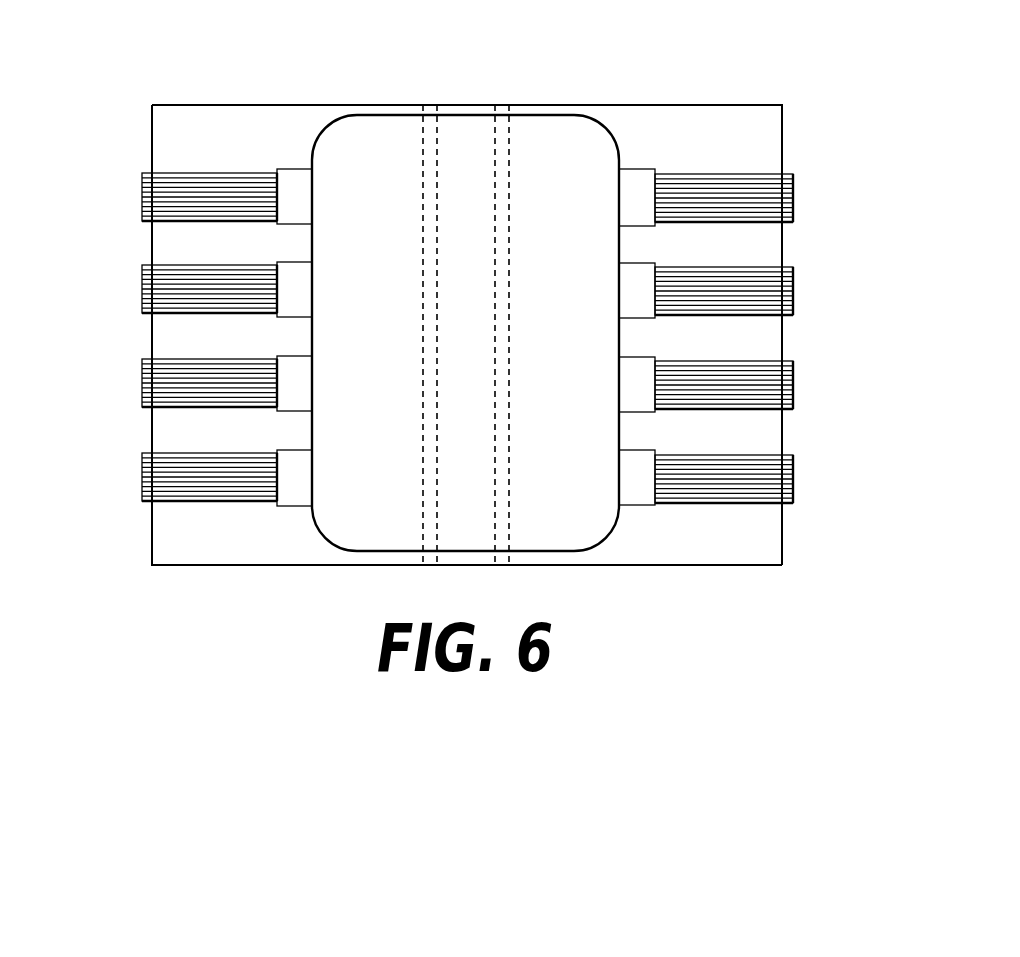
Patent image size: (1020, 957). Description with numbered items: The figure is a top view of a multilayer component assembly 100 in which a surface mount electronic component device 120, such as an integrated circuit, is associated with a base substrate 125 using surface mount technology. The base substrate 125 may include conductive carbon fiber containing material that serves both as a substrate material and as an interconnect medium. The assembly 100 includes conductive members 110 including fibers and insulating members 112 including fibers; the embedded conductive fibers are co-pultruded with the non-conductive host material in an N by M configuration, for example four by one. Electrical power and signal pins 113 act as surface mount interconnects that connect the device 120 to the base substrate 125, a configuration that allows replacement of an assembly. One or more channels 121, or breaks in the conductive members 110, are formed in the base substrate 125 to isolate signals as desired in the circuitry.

The multilayer component assembly 100 is at (746, 79).
The conductive members 110 is at (148, 199).
The insulating members 112 is at (160, 542).
The electrical power and signal pins 113 is at (289, 290).
The surface mount electronic component device 120 is at (378, 136).
The channels 121 is at (496, 445).
The base substrate 125 is at (767, 138).